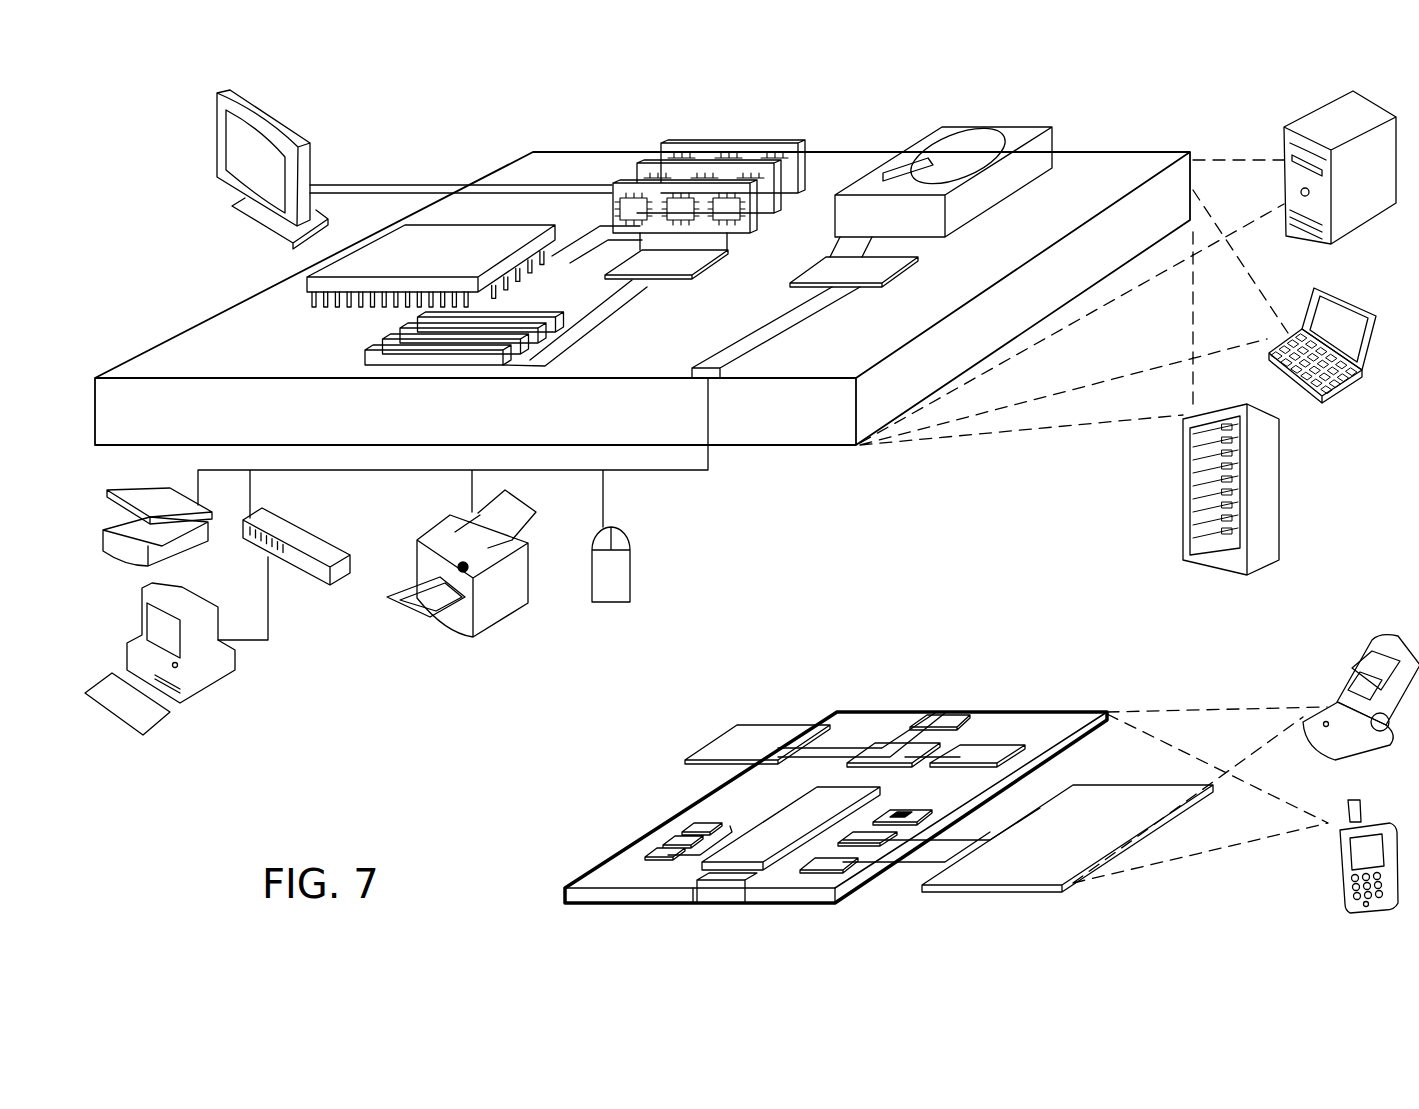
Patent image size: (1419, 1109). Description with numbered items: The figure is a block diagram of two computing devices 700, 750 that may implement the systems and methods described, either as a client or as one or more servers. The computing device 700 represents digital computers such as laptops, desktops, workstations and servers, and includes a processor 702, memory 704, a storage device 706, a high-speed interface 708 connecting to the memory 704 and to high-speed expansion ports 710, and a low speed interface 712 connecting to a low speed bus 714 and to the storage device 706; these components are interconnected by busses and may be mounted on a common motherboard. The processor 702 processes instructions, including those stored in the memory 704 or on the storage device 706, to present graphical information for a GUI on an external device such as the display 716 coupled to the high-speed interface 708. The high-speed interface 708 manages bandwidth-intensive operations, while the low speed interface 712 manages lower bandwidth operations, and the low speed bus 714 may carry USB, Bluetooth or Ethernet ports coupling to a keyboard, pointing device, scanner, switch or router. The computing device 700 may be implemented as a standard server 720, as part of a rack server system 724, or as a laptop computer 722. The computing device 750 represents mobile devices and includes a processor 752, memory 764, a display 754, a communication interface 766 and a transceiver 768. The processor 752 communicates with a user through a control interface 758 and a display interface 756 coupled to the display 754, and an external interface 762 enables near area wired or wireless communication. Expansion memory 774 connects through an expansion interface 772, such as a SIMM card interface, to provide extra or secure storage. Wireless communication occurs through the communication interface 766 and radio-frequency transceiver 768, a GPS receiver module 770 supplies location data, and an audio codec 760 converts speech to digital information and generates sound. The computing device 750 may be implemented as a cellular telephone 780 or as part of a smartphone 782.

The computing device 700 is at (443, 125).
The processor 702 is at (270, 287).
The memory 704 is at (671, 141).
The storage device 706 is at (942, 129).
The high-speed interface 708 is at (643, 266).
The high-speed expansion ports 710 is at (387, 337).
The low speed interface 712 is at (853, 274).
The low speed bus 714 is at (718, 378).
The display 716 is at (221, 103).
The standard server 720 is at (1284, 131).
The laptop computer 722 is at (1315, 288).
The rack server system 724 is at (1183, 520).
The computing device 750 is at (814, 691).
The processor 752 is at (742, 870).
The display 754 is at (1064, 888).
The display interface 756 is at (856, 858).
The control interface 758 is at (900, 830).
The audio codec 760 is at (902, 818).
The external interface 762 is at (723, 888).
The memory 764 is at (667, 846).
The communication interface 766 is at (893, 752).
The transceiver 768 is at (978, 753).
The GPS receiver module 770 is at (948, 714).
The expansion interface 772 is at (798, 724).
The expansion memory 774 is at (730, 725).
The cellular telephone 780 is at (1362, 650).
The smartphone 782 is at (1344, 804).